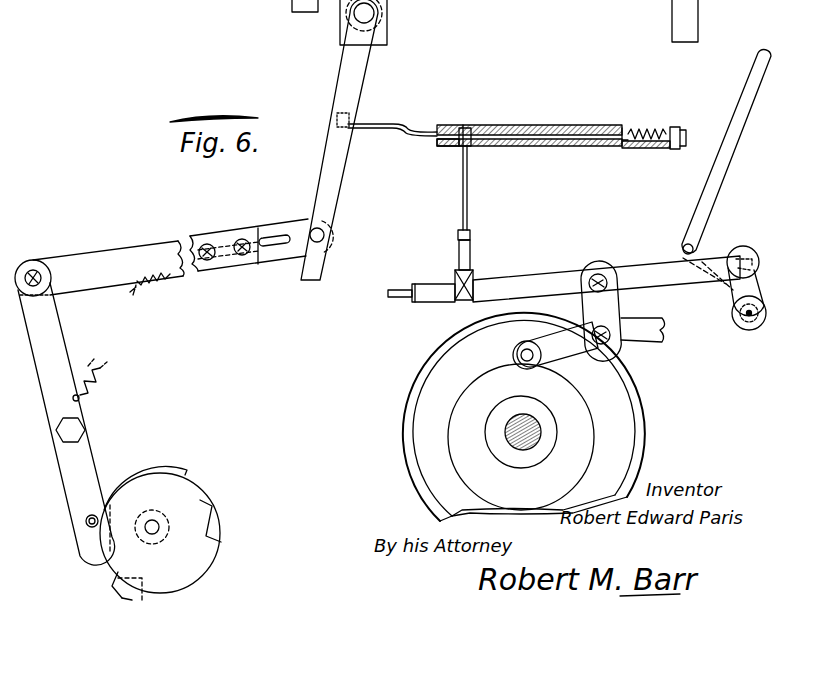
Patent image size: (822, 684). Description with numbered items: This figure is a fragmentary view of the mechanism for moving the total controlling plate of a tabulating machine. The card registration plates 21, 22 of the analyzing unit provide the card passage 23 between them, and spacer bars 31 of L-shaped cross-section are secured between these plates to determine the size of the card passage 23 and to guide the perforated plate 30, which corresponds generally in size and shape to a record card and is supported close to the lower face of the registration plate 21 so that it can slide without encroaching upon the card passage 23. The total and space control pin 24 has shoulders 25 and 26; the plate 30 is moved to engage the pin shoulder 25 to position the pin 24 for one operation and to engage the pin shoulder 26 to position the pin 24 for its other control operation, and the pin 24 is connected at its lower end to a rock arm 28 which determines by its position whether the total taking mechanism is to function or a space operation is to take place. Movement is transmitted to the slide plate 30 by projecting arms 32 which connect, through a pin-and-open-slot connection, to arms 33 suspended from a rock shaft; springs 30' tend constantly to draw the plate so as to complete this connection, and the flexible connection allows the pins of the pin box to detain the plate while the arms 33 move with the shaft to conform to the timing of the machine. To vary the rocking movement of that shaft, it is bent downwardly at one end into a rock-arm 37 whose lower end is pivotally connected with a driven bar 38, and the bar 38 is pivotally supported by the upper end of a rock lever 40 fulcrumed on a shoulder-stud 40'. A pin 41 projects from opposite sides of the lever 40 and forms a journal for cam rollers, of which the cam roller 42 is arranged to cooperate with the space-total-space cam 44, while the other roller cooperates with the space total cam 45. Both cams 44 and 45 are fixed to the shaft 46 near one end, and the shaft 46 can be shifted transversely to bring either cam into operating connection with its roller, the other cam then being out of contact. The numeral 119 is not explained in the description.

The bracket 119 is at (699, 8).
The arm 33 is at (372, 50).
The projecting arm 32 is at (384, 123).
The rock-arm 37 is at (333, 176).
The driven bar 38 is at (163, 232).
The rock lever 40 is at (66, 424).
The shoulder-stud 40' is at (99, 418).
The pin 41 is at (89, 523).
The cam roller 42 is at (87, 520).
The space-total-space cam 44 is at (118, 577).
The space total cam 45 is at (172, 468).
The shaft 46 is at (156, 522).
The total and space control pin 24 is at (466, 125).
The pin shoulder 25 is at (455, 147).
The pin shoulder 26 is at (471, 147).
The perforated plate 30 is at (529, 115).
The card passage 23 is at (551, 147).
The card registration plate 21 is at (642, 128).
The spacer bar 31 is at (668, 126).
The card registration plate 22 is at (628, 149).
The spring 30' is at (695, 148).
The rock arm 28 is at (614, 268).